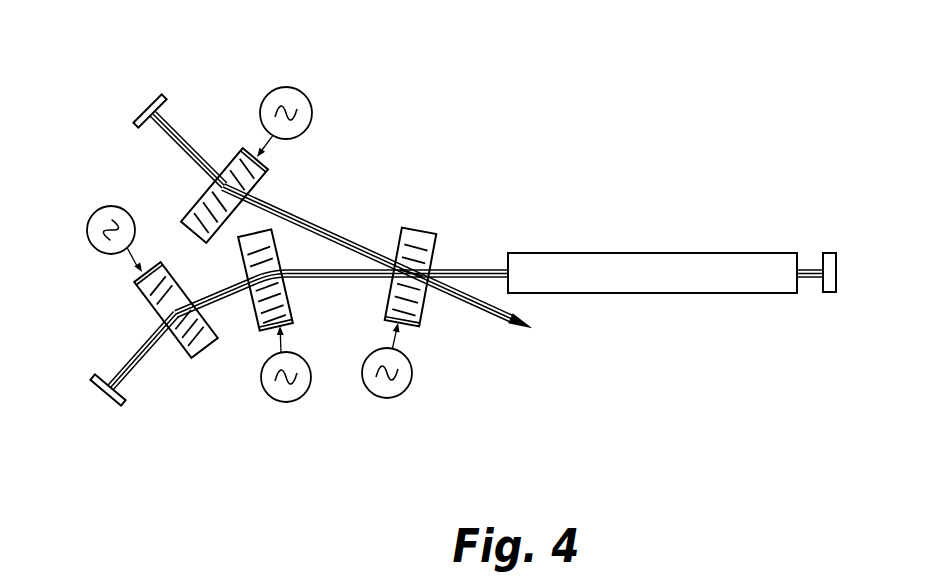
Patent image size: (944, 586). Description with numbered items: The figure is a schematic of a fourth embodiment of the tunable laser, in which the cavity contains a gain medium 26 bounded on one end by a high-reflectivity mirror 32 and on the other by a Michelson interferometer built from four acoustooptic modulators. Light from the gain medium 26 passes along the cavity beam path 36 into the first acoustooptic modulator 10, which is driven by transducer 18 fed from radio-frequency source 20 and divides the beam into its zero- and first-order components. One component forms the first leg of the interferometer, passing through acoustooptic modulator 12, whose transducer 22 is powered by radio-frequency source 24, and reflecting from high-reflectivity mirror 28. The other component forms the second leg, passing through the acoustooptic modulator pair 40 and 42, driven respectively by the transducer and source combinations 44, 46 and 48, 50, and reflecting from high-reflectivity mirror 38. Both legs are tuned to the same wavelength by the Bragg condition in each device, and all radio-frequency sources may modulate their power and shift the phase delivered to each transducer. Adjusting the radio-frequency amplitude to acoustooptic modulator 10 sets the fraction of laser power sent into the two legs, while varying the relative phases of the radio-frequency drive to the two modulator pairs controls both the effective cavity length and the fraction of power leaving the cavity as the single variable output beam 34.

The acoustooptic modulator 10 is at (448, 252).
The acoustooptic modulator 12 is at (220, 161).
The transducer 18 is at (414, 335).
The radio-frequency source 20 is at (410, 384).
The transducer 22 is at (246, 141).
The radio-frequency source 24 is at (308, 100).
The gain medium 26 is at (621, 252).
The high-reflectivity mirror 28 is at (149, 100).
The high-reflectivity mirror 32 is at (821, 288).
The output beam 34 is at (489, 317).
The output beam 36 is at (325, 282).
The high-reflectivity mirror 38 is at (96, 392).
The acoustooptic modulator 40 is at (238, 272).
The acoustooptic modulator 42 is at (141, 318).
The transducer 44 is at (262, 336).
The radio-frequency source 46 is at (263, 388).
The transducer 48 is at (149, 266).
The radio-frequency source 50 is at (88, 222).